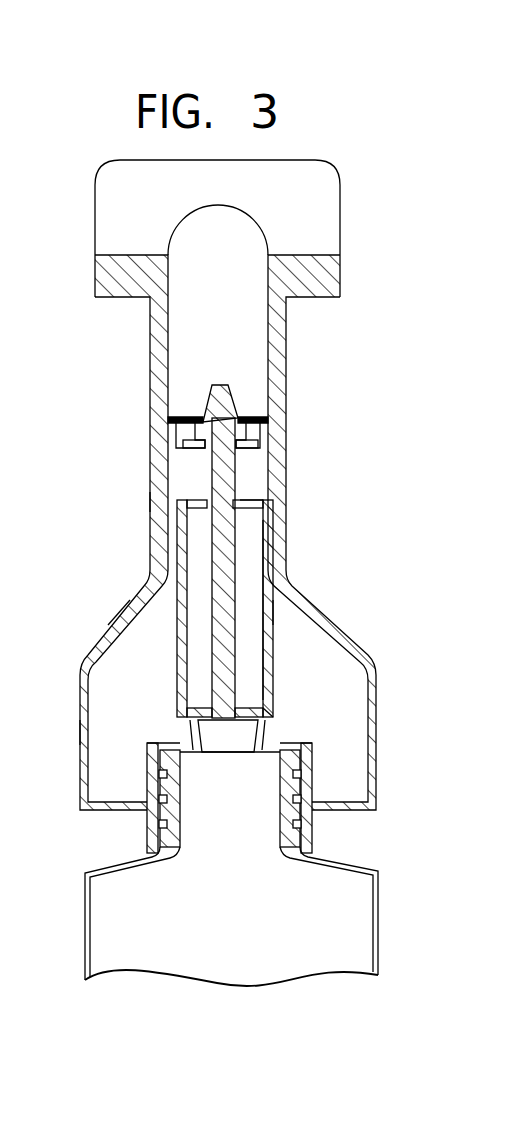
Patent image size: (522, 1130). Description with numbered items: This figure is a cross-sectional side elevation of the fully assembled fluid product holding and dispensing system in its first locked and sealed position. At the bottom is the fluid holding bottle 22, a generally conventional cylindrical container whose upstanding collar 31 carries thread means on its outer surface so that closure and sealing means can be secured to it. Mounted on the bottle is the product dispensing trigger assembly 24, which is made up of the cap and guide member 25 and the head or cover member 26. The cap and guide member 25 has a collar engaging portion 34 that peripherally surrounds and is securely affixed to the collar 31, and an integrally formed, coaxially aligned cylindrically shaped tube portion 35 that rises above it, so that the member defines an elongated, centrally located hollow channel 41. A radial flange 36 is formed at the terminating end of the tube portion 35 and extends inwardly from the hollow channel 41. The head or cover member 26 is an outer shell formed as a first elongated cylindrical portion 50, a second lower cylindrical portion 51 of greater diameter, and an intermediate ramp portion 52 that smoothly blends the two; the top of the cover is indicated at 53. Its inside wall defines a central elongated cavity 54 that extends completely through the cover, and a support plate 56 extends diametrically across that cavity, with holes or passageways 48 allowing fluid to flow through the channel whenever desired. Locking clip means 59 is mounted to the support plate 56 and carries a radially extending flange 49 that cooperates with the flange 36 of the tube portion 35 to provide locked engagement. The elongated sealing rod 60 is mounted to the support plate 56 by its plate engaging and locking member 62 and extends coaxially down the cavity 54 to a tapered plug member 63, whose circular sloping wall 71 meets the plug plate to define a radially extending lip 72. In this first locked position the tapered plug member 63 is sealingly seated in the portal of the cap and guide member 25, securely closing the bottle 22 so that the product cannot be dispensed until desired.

The fluid holding bottle 22 is at (83, 927).
The product dispensing trigger assembly 24 is at (73, 654).
The cap and guide member 25 is at (168, 630).
The head or cover member 26 is at (147, 352).
The collar 31 is at (181, 808).
The collar engaging portion 34 is at (312, 833).
The cylindrically shaped tube portion 35 is at (263, 612).
The radial flange 36 is at (255, 503).
The hollow channel 41 is at (248, 598).
The holes or passageways 48 is at (180, 425).
The radially extending flange 49 is at (186, 446).
The first cylindrical portion 50 is at (153, 500).
The second cylindrical portion 51 is at (80, 732).
The intermediate ramp portion 52 is at (112, 628).
The cap top 53 is at (141, 207).
The central elongated channel or cavity 54 is at (216, 275).
The support plate 56 is at (250, 414).
The locking clip means 59 is at (242, 452).
The sealing rod 60 is at (247, 547).
The plate engaging and locking member 62 is at (211, 388).
The tapered plug member 63 is at (243, 737).
The sloping wall 71 is at (198, 742).
The radially extending lip 72 is at (274, 713).